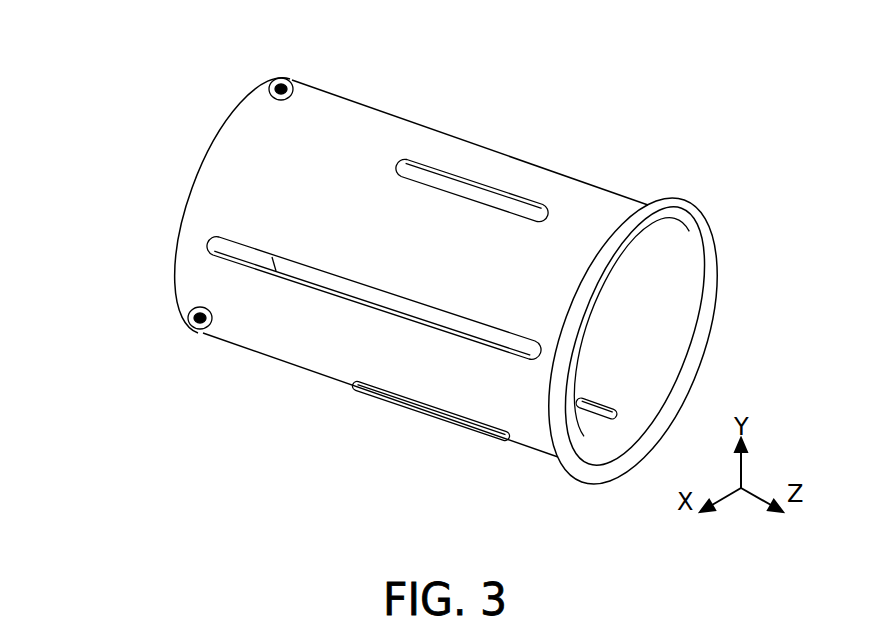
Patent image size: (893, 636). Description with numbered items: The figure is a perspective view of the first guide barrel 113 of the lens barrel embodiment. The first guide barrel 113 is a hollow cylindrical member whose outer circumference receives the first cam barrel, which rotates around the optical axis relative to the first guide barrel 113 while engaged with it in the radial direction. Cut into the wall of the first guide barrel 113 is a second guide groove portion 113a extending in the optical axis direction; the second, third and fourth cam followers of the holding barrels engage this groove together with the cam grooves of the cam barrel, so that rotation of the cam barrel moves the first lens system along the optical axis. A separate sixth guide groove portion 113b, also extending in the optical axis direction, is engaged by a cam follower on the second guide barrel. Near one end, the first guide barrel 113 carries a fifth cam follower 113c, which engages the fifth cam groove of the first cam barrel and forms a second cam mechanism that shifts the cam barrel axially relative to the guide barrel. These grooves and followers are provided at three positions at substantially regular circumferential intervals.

The first guide barrel 113 is at (583, 222).
The second guide groove portion 113a is at (241, 238).
The sixth guide groove portion 113b is at (550, 150).
The fifth cam follower 113c is at (283, 76).